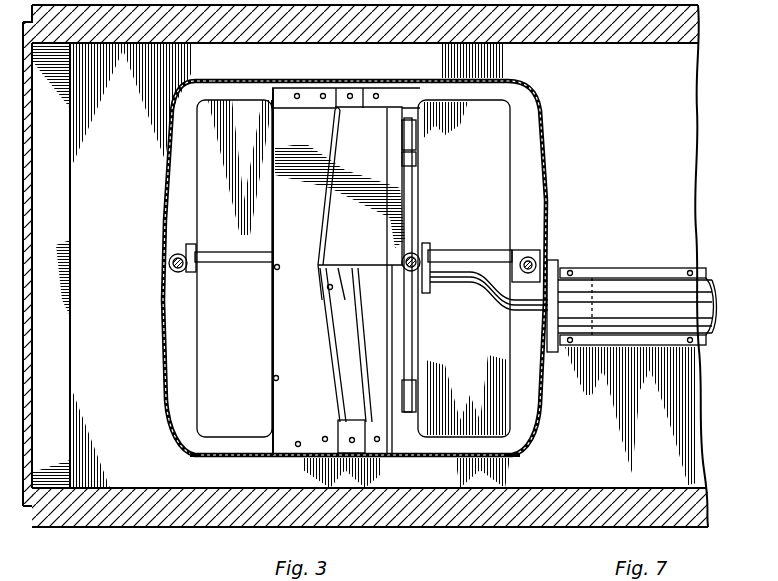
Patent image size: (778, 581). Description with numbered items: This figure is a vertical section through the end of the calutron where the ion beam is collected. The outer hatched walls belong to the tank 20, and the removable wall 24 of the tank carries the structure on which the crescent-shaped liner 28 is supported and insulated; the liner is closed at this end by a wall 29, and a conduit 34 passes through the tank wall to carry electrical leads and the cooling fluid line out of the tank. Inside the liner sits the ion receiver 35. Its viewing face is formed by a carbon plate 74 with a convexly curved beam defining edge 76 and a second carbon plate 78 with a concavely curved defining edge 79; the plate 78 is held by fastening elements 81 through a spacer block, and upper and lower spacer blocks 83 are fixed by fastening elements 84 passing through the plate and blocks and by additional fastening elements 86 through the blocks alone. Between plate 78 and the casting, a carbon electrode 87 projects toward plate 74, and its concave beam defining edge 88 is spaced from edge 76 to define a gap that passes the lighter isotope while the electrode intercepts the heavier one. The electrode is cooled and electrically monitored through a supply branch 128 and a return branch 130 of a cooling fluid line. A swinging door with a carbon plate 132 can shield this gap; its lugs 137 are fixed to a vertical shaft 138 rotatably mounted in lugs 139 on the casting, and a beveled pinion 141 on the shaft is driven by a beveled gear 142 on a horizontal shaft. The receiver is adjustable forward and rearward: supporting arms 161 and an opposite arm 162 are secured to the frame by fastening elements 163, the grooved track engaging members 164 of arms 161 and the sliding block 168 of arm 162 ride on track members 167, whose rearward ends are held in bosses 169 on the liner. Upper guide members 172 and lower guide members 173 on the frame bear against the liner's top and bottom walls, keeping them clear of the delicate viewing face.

The tank 20 is at (133, 530).
The removable wall of the tank 24 is at (627, 168).
The liner 28 is at (158, 340).
The wall 29 is at (230, 106).
The conduit 34 is at (668, 268).
The ion receiver 35 is at (270, 362).
The carbon plate 74 is at (362, 272).
The beam defining edge 76 is at (342, 290).
The second carbon plate 78 is at (292, 115).
The defining edge 79 is at (337, 398).
The fastening elements 81 is at (276, 270).
The spacer blocks 83 is at (326, 93).
The fastening elements 84 is at (299, 93).
The fastening elements 86 is at (366, 93).
The carbon electrode 87 is at (326, 282).
The beam defining edge 88 is at (327, 286).
The supply branch 128 is at (520, 320).
The return branch 130 is at (500, 302).
The carbon plate 132 is at (398, 120).
The lugs 137 is at (418, 130).
The shaft 138 is at (414, 190).
The lugs 139 is at (418, 152).
The beveled pinion 141 is at (421, 254).
The beveled gear 142 is at (405, 270).
The receiver supporting arms 161 is at (488, 250).
The receiver supporting arm 162 is at (228, 264).
The fastening elements 163 is at (432, 292).
The track engaging members 164 is at (528, 258).
The track member 167 is at (170, 264).
The track engaging member 168 is at (188, 250).
The bosses 169 is at (175, 272).
The upper guide members 172 is at (462, 112).
The lower guide members 173 is at (268, 458).